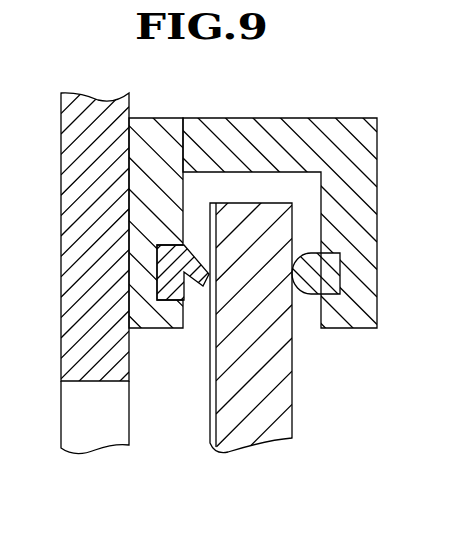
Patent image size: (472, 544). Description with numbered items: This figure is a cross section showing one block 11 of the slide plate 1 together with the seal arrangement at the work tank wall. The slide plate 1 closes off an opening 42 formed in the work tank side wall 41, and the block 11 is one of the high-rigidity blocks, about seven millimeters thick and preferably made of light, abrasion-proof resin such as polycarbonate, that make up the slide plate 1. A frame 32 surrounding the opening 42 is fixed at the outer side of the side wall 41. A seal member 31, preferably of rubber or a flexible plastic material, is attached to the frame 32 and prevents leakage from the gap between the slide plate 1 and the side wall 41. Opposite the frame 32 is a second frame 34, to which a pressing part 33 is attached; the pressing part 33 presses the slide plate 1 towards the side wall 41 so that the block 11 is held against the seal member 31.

The slide plate 1 is at (253, 234).
The block 11 is at (252, 447).
The seal member 31 is at (194, 287).
The frame 32 is at (138, 305).
The pressing part 33 is at (310, 294).
The frame 34 is at (212, 118).
The work tank side wall 41 is at (113, 101).
The opening 42 is at (107, 422).